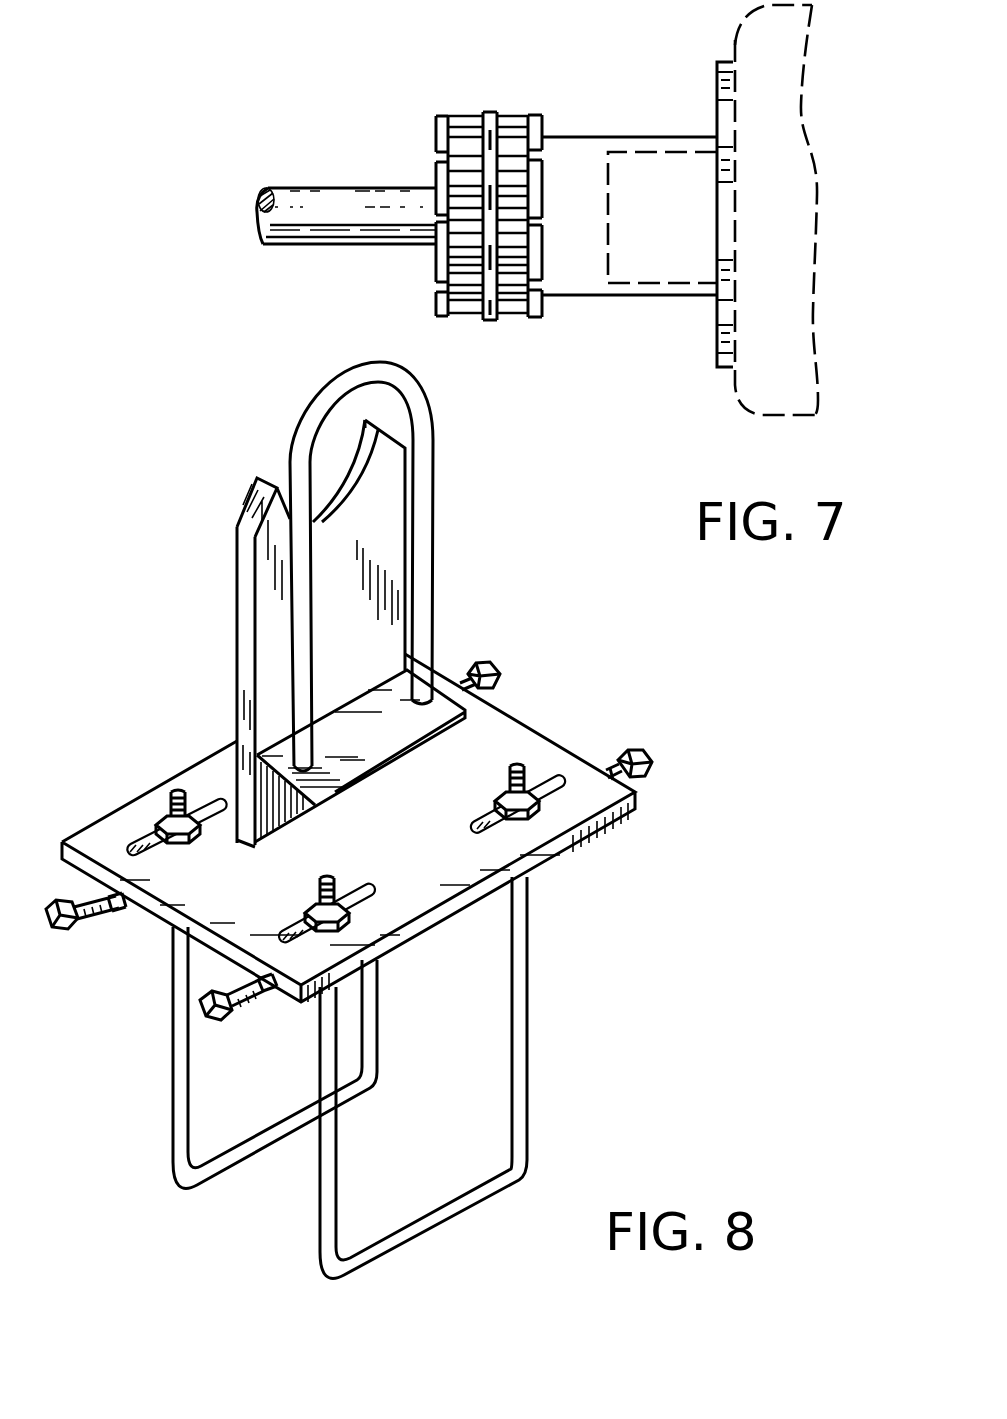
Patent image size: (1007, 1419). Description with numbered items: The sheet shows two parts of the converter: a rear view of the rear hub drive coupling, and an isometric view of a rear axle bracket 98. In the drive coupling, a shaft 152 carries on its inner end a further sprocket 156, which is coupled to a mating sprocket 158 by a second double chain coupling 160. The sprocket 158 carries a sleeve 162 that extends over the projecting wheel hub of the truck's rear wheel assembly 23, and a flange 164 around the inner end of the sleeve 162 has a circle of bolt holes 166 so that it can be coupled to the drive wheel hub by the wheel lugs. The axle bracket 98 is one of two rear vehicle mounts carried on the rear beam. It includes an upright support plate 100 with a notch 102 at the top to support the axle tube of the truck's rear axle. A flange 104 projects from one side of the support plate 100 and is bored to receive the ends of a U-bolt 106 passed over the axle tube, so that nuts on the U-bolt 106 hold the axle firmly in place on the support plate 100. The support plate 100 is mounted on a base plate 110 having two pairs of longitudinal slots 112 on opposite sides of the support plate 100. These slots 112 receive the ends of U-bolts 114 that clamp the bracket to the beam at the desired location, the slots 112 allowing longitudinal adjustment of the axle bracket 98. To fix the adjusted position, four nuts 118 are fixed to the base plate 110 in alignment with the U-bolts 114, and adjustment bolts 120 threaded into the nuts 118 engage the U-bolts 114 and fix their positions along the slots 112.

In FIG. 7, the rear wheel assembly 23 is at (797, 122).
In FIG. 7, the shaft 152 is at (314, 178).
In FIG. 7, the sprocket 156 is at (455, 155).
In FIG. 7, the sprocket 158 is at (511, 287).
In FIG. 7, the second double chain coupling 160 is at (492, 103).
In FIG. 7, the sleeve 162 is at (572, 126).
In FIG. 7, the flange 164 is at (727, 58).
In FIG. 7, the bolt holes 166 is at (722, 88).
In FIG. 8, the axle bracket 98 is at (720, 798).
In FIG. 8, the support plate 100 is at (230, 590).
In FIG. 8, the notch 102 is at (372, 451).
In FIG. 8, the flange 104 is at (458, 730).
In FIG. 8, the U-bolt 106 is at (314, 392).
In FIG. 8, the base plate 110 is at (590, 839).
In FIG. 8, the longitudinal slots 112 is at (156, 832).
In FIG. 8, the U-bolts 114 is at (168, 1094).
In FIG. 8, the nuts 118 is at (119, 918).
In FIG. 8, the adjustment bolts 120 is at (394, 864).